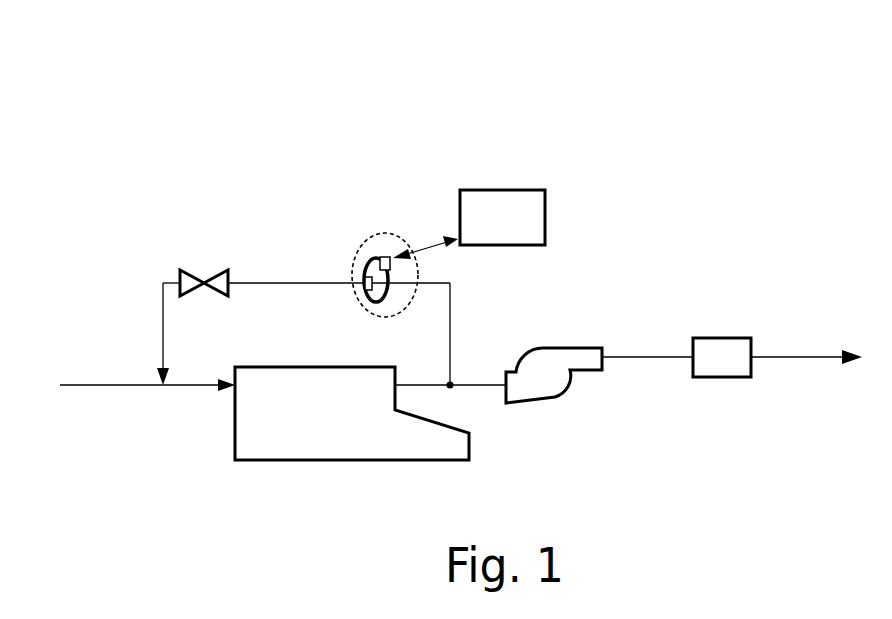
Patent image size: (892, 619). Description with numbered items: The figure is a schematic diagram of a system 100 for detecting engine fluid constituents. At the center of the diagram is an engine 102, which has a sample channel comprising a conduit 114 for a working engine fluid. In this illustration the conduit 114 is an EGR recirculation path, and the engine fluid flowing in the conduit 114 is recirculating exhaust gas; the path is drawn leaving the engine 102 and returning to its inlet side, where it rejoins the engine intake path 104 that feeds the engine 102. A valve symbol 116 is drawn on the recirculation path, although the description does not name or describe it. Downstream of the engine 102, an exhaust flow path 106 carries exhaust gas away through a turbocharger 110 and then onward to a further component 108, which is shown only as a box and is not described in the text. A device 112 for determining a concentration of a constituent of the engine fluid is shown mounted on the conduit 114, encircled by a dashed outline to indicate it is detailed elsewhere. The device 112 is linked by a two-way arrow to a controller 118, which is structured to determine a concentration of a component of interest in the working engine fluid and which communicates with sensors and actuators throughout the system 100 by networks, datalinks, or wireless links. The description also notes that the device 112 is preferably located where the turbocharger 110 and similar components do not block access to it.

The system 100 is at (86, 74).
The engine 102 is at (352, 413).
The engine intake path 104 is at (101, 385).
The exhaust flow path 106 is at (644, 355).
The downstream component 108 is at (720, 338).
The turbocharger 110 is at (560, 346).
The device 112 is at (381, 228).
The conduit 114 is at (292, 280).
The valve 116 is at (216, 270).
The controller 118 is at (469, 224).